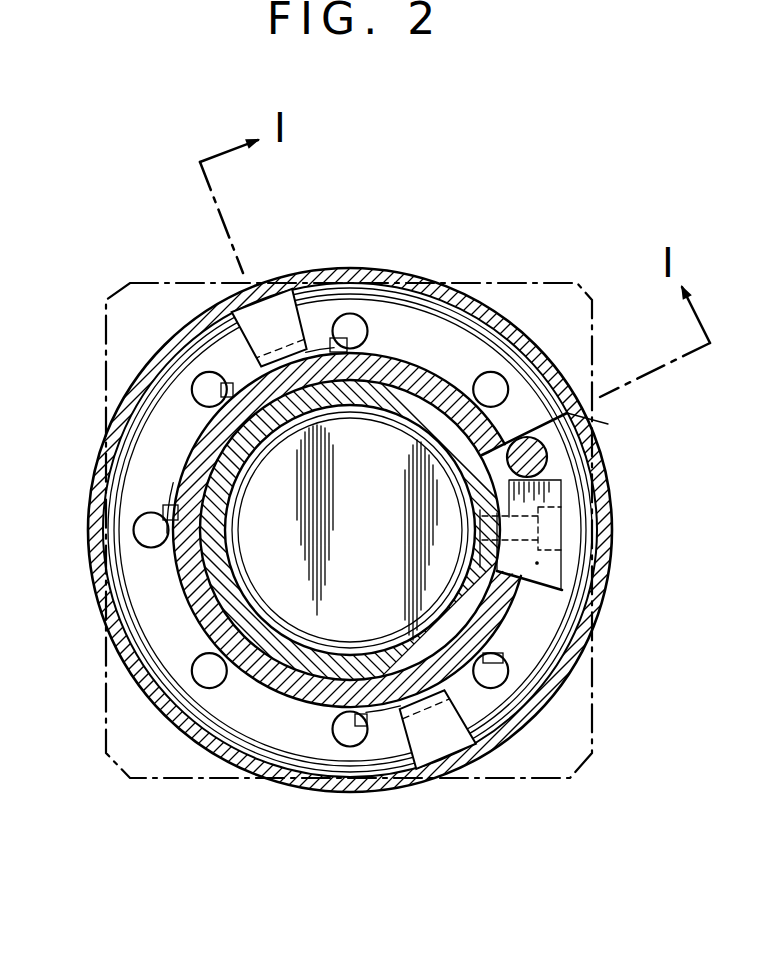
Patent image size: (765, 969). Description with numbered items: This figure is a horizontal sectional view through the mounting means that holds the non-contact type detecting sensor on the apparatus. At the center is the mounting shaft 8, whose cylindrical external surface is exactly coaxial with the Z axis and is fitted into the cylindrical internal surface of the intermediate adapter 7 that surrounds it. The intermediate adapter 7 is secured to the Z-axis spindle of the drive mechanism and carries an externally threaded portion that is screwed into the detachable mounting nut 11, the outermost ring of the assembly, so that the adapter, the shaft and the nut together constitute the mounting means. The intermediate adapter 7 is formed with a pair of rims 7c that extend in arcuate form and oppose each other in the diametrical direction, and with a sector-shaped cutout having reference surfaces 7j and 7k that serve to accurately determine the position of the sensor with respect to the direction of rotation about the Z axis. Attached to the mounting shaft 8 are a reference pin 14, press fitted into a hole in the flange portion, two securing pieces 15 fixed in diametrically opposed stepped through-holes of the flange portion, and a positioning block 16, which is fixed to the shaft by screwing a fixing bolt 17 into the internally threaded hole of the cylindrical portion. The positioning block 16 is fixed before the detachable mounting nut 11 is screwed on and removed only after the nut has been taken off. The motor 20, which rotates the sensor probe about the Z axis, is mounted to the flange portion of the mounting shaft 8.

The intermediate adapter 7 is at (276, 698).
The rims 7c is at (172, 487).
The reference surface 7j is at (555, 572).
The reference surface 7k is at (606, 423).
The mounting shaft 8 is at (223, 592).
The detachable mounting nut 11 is at (406, 270).
The reference pin 14 is at (548, 448).
The securing pieces 15 is at (275, 322).
The positioning block 16 is at (560, 494).
The fixing bolt 17 is at (545, 535).
The motor 20 is at (372, 450).